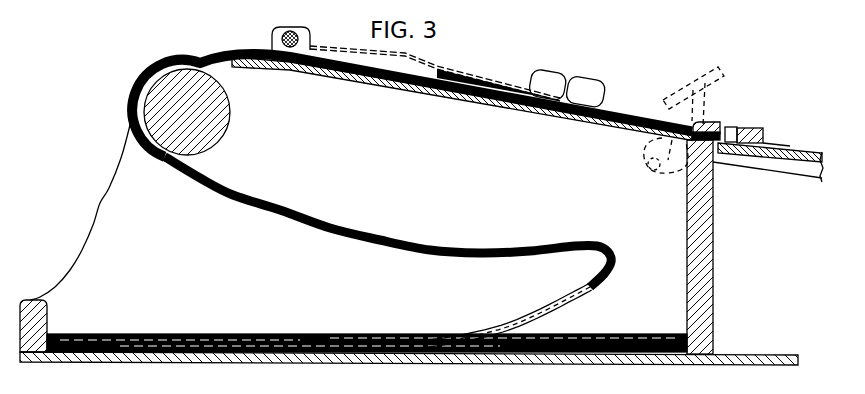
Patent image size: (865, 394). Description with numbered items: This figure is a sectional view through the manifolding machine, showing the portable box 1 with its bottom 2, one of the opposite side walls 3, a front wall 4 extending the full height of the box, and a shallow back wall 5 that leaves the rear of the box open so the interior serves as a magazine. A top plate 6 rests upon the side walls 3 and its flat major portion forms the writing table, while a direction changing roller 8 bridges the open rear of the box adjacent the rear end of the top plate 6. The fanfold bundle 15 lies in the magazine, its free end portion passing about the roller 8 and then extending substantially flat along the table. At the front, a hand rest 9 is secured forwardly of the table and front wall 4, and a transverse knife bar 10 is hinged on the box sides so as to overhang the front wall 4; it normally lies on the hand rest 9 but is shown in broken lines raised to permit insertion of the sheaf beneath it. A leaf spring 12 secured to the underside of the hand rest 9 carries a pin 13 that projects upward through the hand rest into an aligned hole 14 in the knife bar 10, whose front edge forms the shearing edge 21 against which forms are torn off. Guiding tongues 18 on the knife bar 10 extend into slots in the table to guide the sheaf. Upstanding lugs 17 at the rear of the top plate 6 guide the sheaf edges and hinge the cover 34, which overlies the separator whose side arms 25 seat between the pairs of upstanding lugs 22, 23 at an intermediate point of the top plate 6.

The portable box 1 is at (421, 172).
The bottom 2 is at (337, 361).
The side wall 3 is at (100, 201).
The front wall 4 is at (712, 233).
The back wall 5 is at (29, 299).
The top plate 6 is at (351, 79).
The direction changing roller 8 is at (222, 110).
The hand rest 9 is at (774, 150).
The knife bar 10 is at (723, 116).
The leaf spring 12 is at (755, 157).
The pin 13 is at (743, 129).
The hole 14 is at (728, 126).
The fanfold bundle 15 is at (248, 333).
The upstanding lug 17 is at (305, 38).
The guiding tongue 18 is at (642, 147).
The shearing edge 21 is at (764, 133).
The upstanding lug 22 is at (545, 77).
The upstanding lug 23 is at (582, 84).
The side arm 25 is at (602, 108).
The cover 34 is at (452, 62).